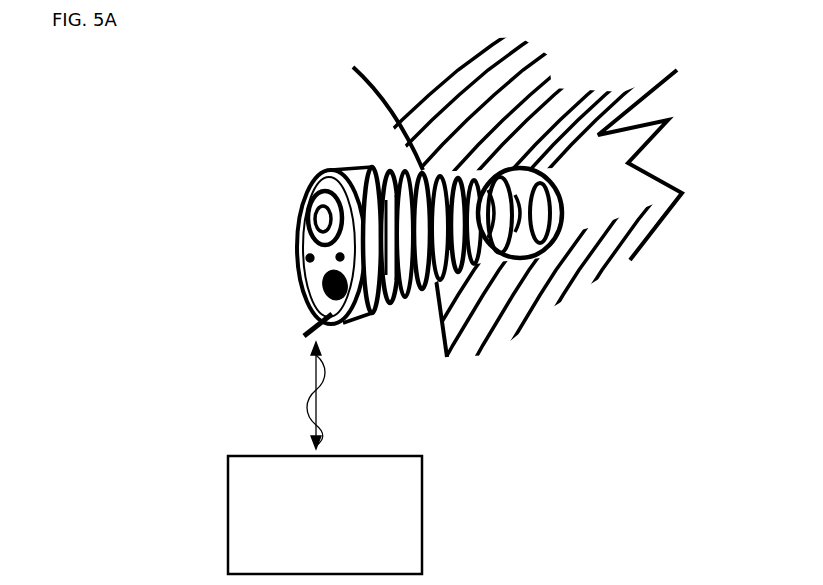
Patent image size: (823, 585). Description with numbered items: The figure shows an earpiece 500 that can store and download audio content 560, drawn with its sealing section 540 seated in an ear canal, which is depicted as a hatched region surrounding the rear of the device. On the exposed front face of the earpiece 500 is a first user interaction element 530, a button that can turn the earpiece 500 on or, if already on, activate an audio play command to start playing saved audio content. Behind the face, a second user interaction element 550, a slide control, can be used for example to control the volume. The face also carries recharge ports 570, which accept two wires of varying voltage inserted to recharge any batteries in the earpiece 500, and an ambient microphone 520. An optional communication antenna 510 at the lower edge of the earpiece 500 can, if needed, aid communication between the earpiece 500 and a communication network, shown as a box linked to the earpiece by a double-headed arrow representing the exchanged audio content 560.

The earpiece 500 is at (168, 143).
The optional communication antenna 510 is at (318, 328).
The ambient microphone 520 is at (325, 283).
The first user interaction element 530 is at (318, 222).
The sealing section 540 is at (465, 190).
The second user interaction element 550 is at (390, 238).
The audio content 560 is at (316, 388).
The recharge ports 570 is at (337, 258).